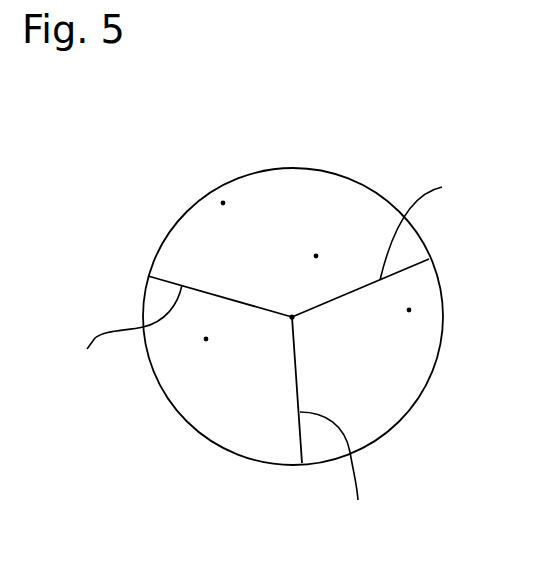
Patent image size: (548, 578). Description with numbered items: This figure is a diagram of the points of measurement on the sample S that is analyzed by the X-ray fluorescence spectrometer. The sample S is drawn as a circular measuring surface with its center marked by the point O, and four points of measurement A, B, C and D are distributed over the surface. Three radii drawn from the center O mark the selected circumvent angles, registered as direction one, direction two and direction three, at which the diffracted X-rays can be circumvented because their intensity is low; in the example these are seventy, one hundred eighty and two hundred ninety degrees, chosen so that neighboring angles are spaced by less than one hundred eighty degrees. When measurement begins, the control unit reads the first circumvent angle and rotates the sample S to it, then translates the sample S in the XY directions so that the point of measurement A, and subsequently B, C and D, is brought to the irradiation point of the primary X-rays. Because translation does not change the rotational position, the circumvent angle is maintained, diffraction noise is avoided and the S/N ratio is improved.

The sample S is at (317, 168).
The center point O is at (289, 297).
The point of measurement A is at (407, 332).
The point of measurement B is at (202, 360).
The point of measurement C is at (222, 225).
The point of measurement D is at (315, 236).